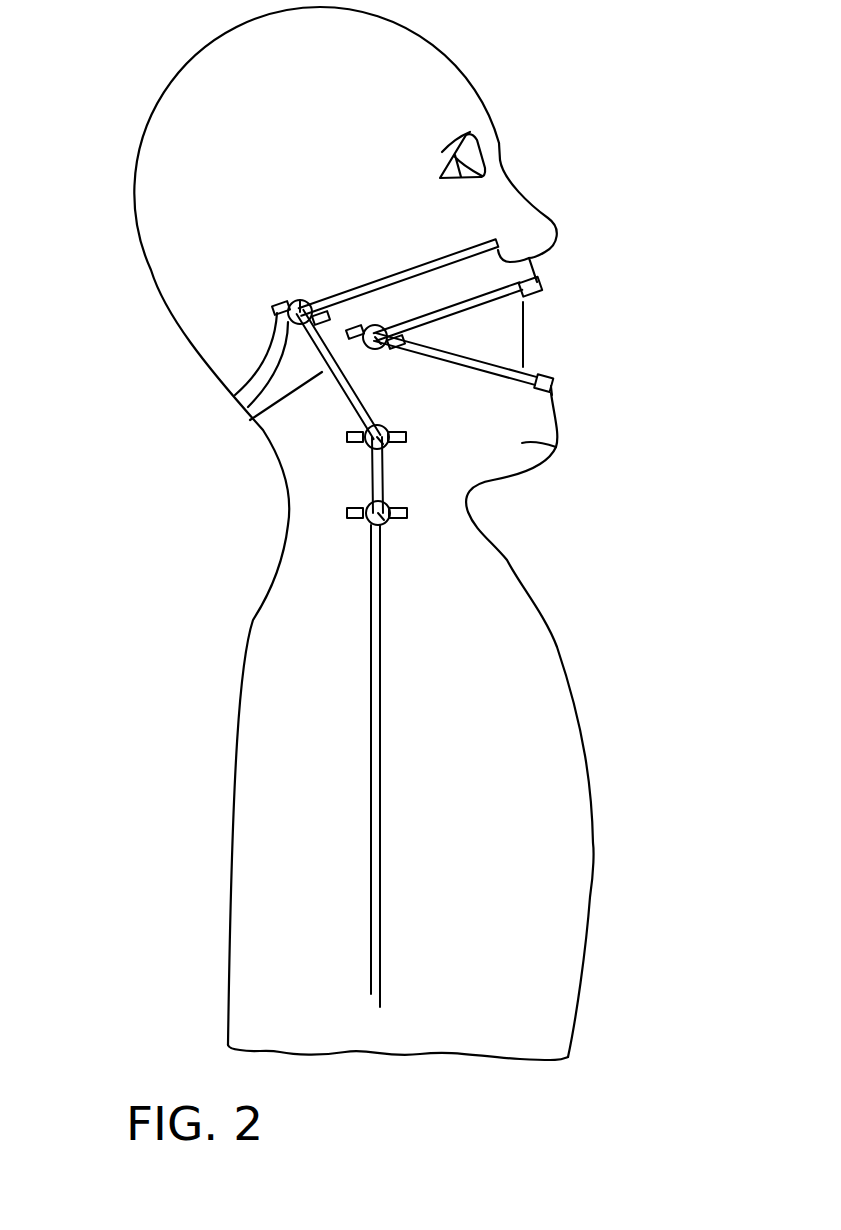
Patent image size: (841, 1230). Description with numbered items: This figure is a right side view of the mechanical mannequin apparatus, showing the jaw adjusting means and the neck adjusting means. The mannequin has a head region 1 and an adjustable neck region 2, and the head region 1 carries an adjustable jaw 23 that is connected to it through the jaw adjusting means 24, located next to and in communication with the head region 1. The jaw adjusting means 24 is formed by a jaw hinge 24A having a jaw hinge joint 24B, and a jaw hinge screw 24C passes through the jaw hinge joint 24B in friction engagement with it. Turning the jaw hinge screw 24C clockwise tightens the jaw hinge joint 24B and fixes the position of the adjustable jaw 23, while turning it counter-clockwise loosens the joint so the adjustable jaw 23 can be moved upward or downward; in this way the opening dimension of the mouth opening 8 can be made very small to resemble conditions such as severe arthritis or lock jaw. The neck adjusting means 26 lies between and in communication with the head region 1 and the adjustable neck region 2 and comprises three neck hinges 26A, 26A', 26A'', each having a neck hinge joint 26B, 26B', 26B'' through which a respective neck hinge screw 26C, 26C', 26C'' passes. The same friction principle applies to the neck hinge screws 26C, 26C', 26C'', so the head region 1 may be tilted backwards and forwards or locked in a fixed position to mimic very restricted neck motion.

The head region 1 is at (127, 9).
The adjustable neck region 2 is at (228, 485).
The mouth opening 8 is at (552, 355).
The adjustable jaw 23 is at (522, 443).
The jaw adjusting means 24 is at (533, 302).
The jaw hinge 24A is at (538, 279).
The jaw hinge joint 24B is at (392, 295).
The jaw hinge screw 24C is at (390, 355).
The neck adjusting means 26 is at (265, 427).
The neck hinge 26A is at (399, 251).
The neck hinge joint 26B is at (250, 265).
The neck hinge screw 26C is at (252, 295).
The neck hinge 26A' is at (291, 469).
The neck hinge joint 26B' is at (464, 491).
The neck hinge screw 26C' is at (483, 471).
The neck hinge 26A'' is at (269, 766).
The neck hinge joint 26B'' is at (273, 549).
The neck hinge screw 26C'' is at (439, 554).